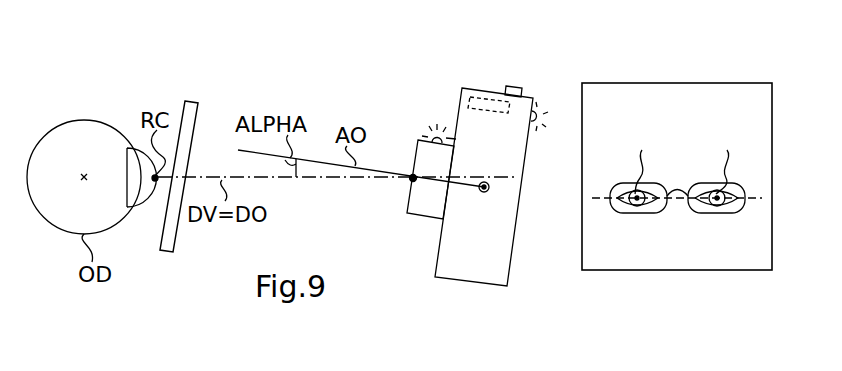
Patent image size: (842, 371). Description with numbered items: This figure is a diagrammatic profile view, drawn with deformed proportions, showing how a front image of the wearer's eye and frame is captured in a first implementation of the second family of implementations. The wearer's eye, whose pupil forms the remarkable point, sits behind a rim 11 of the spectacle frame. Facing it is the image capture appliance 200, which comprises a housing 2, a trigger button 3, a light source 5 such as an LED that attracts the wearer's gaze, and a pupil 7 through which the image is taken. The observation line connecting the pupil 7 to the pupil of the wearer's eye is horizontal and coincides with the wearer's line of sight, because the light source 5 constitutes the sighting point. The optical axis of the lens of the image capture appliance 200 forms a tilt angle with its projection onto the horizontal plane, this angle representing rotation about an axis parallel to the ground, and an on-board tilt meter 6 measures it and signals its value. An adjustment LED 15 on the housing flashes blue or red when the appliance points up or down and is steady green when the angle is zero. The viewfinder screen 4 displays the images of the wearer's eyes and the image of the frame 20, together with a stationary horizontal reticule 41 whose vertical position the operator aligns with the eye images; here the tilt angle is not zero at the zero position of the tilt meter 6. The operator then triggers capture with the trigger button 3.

The housing 2 is at (468, 287).
The trigger button 3 is at (514, 84).
The viewfinder screen 4 is at (677, 203).
The light source 5 is at (441, 123).
The tilt meter 6 is at (485, 106).
The pupil of the image capture appliance 7 is at (412, 178).
The rim 11 is at (192, 100).
The adjustment LED 15 is at (545, 111).
The frame 20 is at (633, 214).
The horizontal reticule 41 is at (755, 199).
The image capture appliance 200 is at (469, 198).